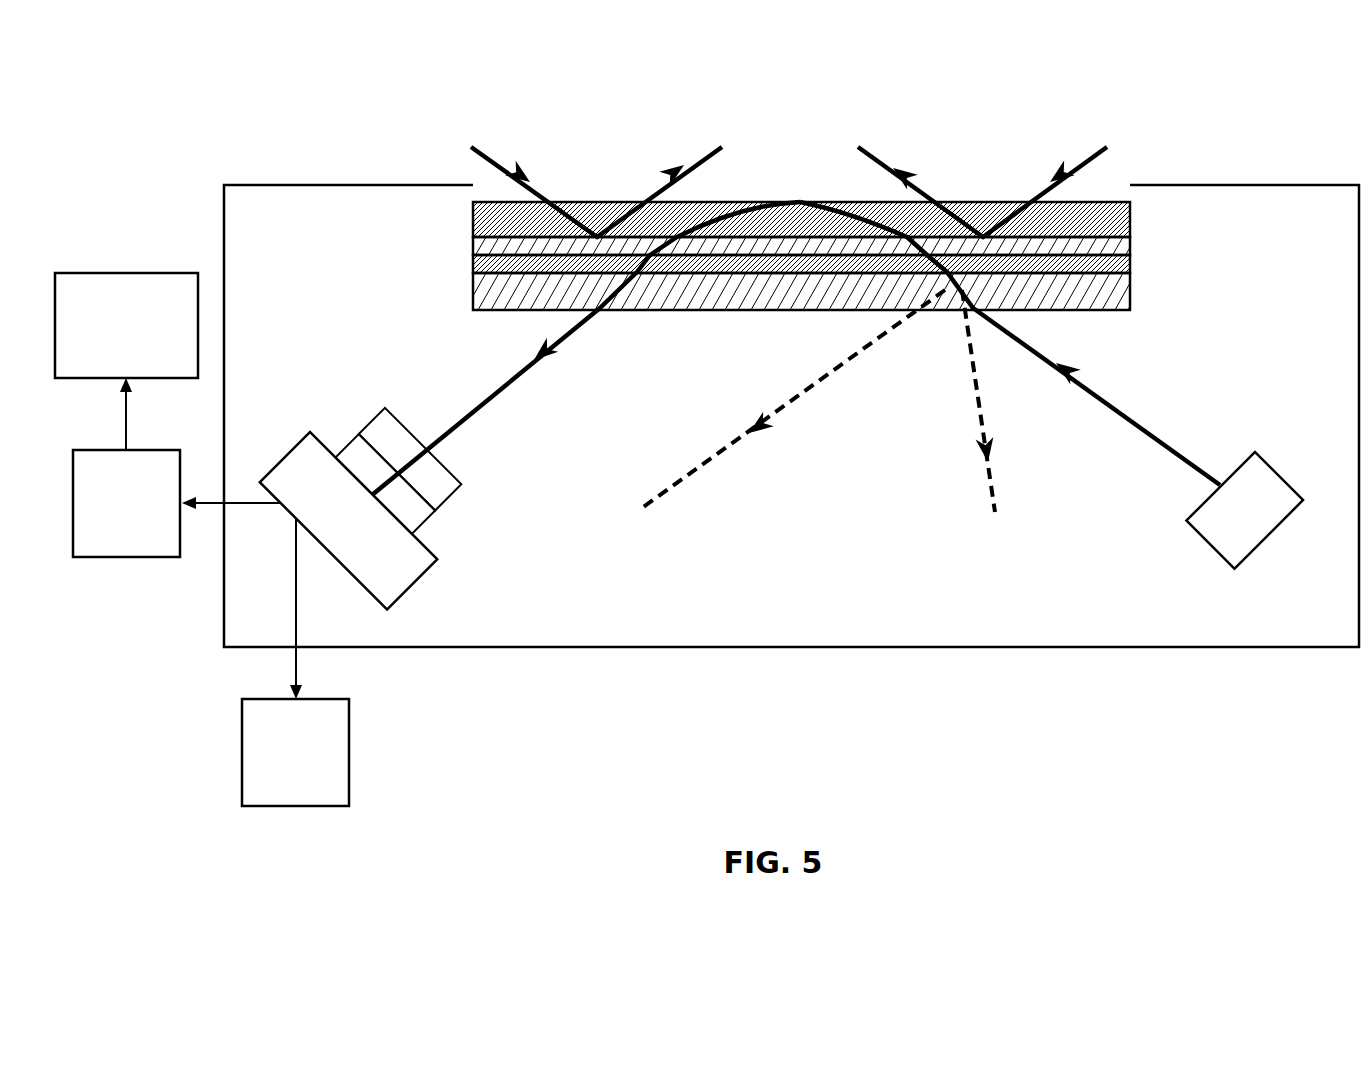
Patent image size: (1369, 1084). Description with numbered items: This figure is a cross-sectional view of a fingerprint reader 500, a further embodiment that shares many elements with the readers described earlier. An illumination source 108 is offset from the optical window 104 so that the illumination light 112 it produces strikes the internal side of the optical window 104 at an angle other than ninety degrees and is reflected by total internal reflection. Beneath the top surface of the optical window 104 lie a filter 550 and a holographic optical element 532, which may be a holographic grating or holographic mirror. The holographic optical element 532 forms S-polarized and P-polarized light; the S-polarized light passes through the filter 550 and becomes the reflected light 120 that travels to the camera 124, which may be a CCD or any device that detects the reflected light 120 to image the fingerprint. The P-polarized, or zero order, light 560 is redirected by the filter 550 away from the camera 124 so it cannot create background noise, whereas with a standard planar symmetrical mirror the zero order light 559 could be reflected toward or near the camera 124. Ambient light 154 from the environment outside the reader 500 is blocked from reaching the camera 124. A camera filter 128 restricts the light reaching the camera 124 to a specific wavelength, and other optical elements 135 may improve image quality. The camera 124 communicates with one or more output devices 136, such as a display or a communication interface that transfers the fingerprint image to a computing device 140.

The fingerprint reader 500 is at (1262, 162).
The optical window 104 is at (1136, 208).
The filter 550 is at (1132, 238).
The holographic optical element 532 is at (1132, 264).
The ambient light 154 is at (550, 182).
The reflected light 120 is at (475, 407).
The illumination light 112 is at (1123, 401).
The zero order light 559 is at (798, 398).
The zero order light 560 is at (985, 420).
The camera 124 is at (348, 520).
The other optical elements 135 is at (345, 450).
The camera filter 128 is at (457, 483).
The illumination source 108 is at (1244, 510).
The computing device 140 is at (126, 325).
The output device 136 is at (211, 592).